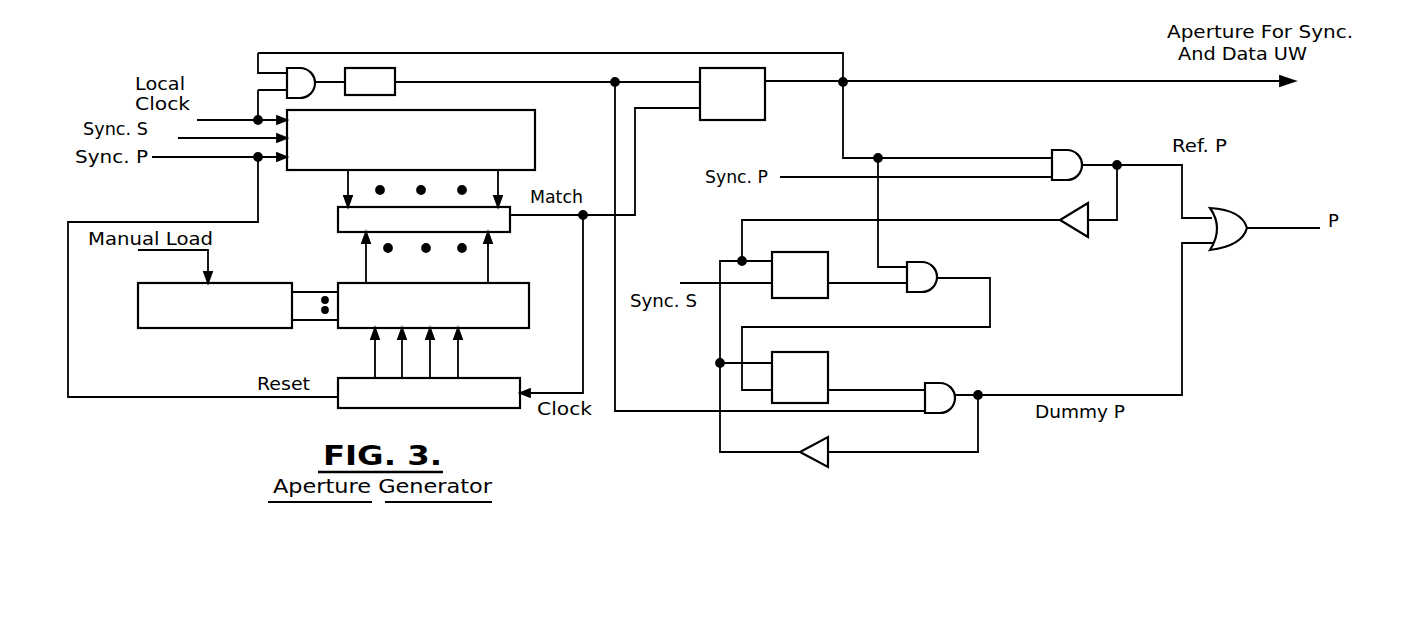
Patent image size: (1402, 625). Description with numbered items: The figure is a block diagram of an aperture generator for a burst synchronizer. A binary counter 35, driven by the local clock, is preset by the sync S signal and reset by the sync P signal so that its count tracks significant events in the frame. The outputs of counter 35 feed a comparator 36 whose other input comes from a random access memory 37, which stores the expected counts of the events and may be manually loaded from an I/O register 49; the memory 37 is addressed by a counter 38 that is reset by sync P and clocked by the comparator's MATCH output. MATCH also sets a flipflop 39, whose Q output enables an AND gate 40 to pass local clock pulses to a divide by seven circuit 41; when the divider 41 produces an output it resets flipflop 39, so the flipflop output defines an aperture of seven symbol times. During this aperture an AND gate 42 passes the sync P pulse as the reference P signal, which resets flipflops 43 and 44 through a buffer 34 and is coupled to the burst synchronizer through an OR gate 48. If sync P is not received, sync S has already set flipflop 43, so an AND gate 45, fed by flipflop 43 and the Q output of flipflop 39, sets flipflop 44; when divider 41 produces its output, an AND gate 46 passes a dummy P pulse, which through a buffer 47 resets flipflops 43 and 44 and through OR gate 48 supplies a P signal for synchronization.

The buffer 34 is at (1079, 224).
The binary counter 35 is at (526, 135).
The comparator 36 is at (498, 218).
The random access memory 37 is at (515, 311).
The counter 38 is at (506, 388).
The flipflop 39 is at (750, 107).
The AND gate 40 is at (300, 66).
The divide by 7 circuit 41 is at (395, 70).
The AND gate 42 is at (1065, 150).
The flipflop 43 is at (816, 270).
The flipflop 44 is at (816, 372).
The AND gate 45 is at (929, 271).
The AND gate 46 is at (945, 386).
The buffer 47 is at (830, 460).
The OR gate 48 is at (1235, 216).
The I/O register 49 is at (138, 297).